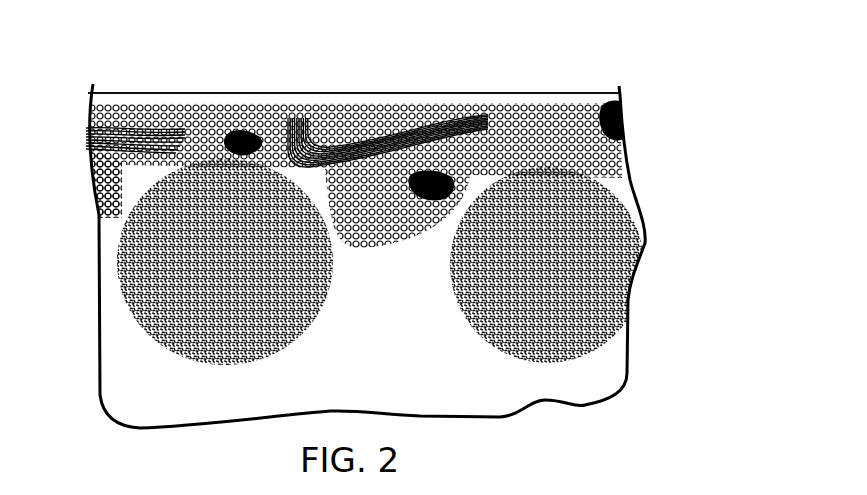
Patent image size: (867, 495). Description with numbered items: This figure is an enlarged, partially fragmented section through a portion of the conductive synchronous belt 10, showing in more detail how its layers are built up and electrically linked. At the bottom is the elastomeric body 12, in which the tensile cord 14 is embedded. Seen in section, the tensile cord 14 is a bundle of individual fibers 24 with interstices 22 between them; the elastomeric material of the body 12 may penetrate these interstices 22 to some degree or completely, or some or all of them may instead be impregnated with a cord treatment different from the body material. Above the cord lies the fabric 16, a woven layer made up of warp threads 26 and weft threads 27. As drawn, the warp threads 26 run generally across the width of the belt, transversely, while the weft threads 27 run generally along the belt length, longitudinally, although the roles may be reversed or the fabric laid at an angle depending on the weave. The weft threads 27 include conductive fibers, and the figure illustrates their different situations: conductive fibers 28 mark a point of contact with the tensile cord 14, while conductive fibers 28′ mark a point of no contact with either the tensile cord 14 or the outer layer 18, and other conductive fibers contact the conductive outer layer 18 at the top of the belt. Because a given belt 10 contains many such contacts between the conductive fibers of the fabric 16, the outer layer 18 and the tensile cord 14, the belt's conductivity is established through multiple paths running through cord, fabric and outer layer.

The synchronous belt 10 is at (593, 57).
The elastomeric body 12 is at (126, 363).
The tensile cord 14 is at (627, 318).
The fabric layer 16 is at (623, 143).
The outer layer 18 is at (480, 105).
The interstices 22 is at (118, 262).
The individual fibers 24 is at (637, 260).
The warp threads 26 is at (107, 142).
The weft threads 27 is at (100, 192).
The conductive fibers 28 is at (237, 128).
The conductive fibers 28′ is at (412, 167).